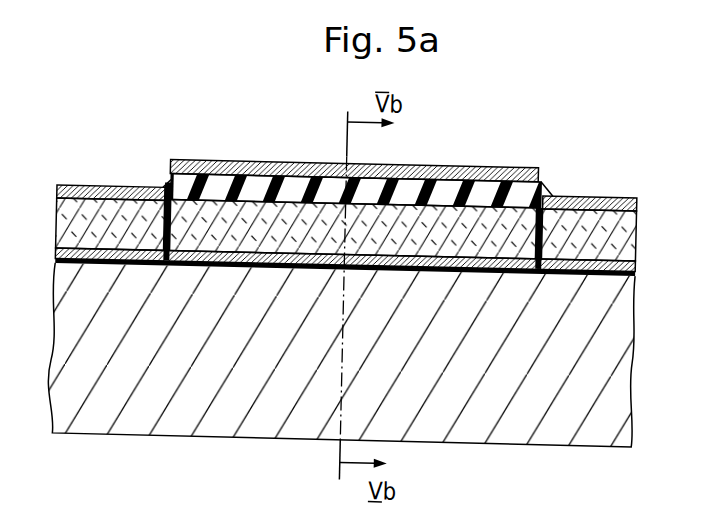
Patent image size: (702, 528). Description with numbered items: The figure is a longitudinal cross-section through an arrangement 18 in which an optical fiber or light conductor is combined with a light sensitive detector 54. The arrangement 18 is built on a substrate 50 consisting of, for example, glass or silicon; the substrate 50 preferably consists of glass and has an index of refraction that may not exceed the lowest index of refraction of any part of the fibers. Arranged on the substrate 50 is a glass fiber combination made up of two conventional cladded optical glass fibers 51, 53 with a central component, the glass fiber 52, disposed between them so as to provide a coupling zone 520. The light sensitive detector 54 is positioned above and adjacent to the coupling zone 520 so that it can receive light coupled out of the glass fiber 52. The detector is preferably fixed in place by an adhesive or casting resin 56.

The arrangement 18 is at (441, 130).
The substrate 50 is at (68, 423).
The cladded optical glass fiber 51 is at (62, 186).
The glass fiber 52 is at (305, 157).
The coupling zone 520 is at (256, 180).
The cladded optical glass fiber 53 is at (578, 188).
The light sensitive detector 54 is at (501, 157).
The adhesive or casting resin 56 is at (167, 179).